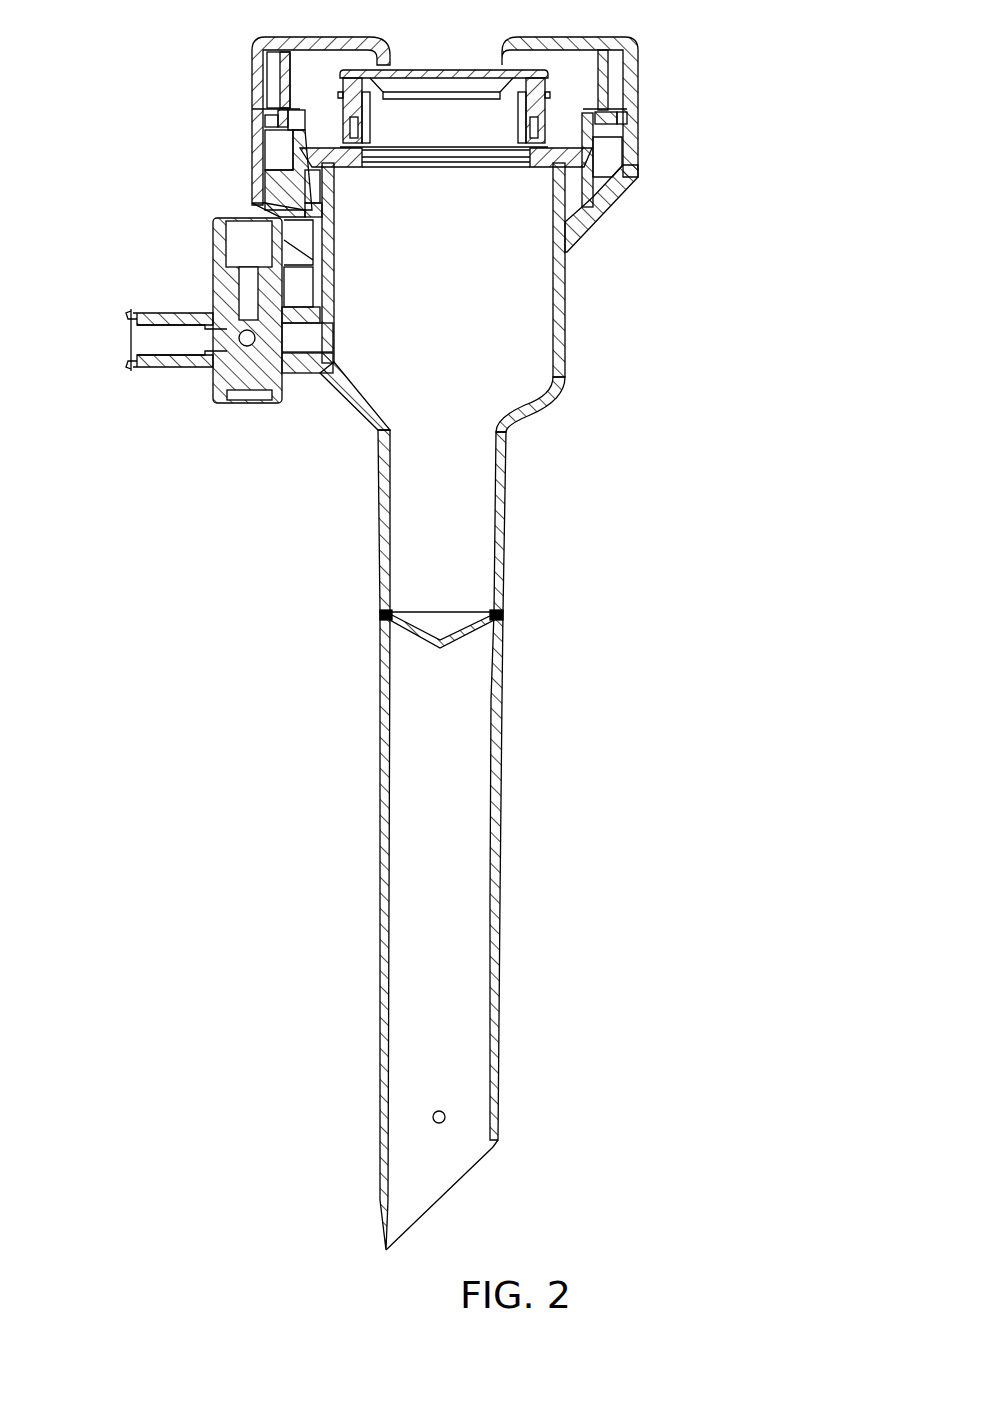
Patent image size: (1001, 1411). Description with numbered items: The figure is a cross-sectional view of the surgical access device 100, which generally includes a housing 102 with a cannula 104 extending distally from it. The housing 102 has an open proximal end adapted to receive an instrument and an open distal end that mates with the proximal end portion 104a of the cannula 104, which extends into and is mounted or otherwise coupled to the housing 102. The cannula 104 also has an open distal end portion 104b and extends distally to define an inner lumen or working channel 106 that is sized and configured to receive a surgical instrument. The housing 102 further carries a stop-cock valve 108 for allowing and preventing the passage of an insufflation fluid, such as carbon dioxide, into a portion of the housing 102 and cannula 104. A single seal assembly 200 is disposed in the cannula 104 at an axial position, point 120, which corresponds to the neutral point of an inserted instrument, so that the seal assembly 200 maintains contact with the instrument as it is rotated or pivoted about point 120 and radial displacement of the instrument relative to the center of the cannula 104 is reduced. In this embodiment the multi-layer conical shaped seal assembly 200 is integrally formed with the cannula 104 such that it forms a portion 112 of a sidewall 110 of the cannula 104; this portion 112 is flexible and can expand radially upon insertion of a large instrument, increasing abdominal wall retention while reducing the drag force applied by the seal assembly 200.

The surgical access device 100 is at (104, 80).
The housing 102 is at (635, 66).
The cannula 104 is at (514, 893).
The proximal end portion of the cannula 104a is at (585, 380).
The distal end portion of the cannula 104b is at (514, 1057).
The inner lumen or working channel 106 is at (487, 492).
The stop-cock valve 108 is at (132, 337).
The sidewall of the cannula 110 is at (380, 893).
The portion of the sidewall formed by the seal 112 is at (498, 612).
The point 120 is at (438, 624).
The seal assembly 200 is at (410, 625).